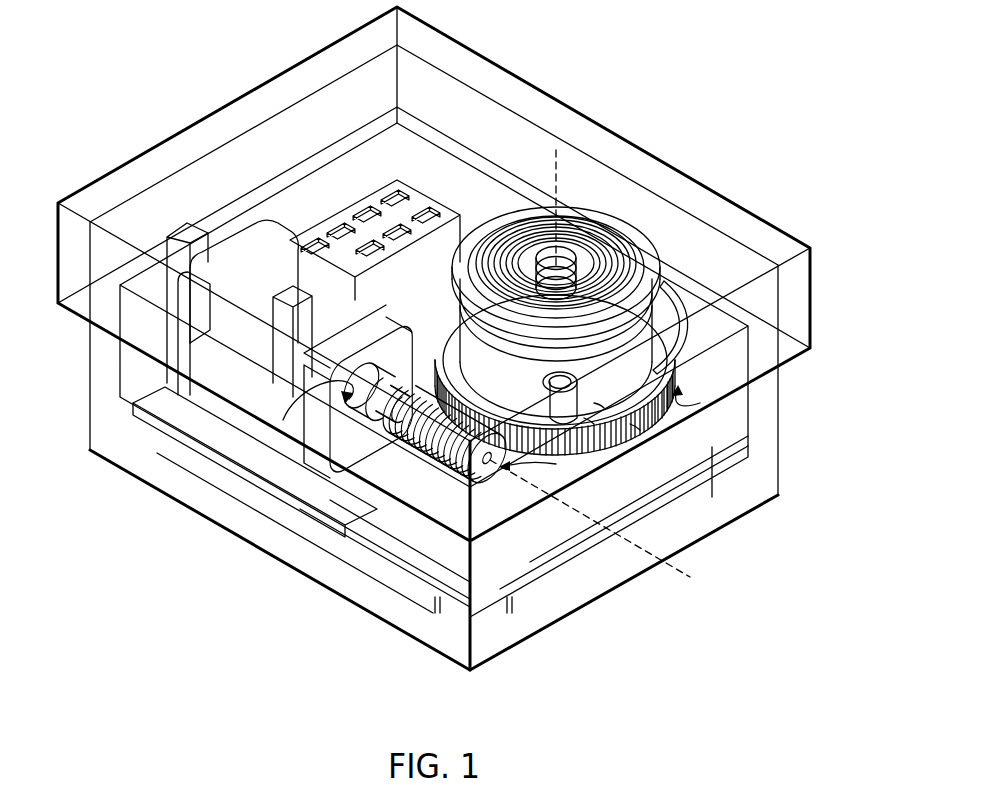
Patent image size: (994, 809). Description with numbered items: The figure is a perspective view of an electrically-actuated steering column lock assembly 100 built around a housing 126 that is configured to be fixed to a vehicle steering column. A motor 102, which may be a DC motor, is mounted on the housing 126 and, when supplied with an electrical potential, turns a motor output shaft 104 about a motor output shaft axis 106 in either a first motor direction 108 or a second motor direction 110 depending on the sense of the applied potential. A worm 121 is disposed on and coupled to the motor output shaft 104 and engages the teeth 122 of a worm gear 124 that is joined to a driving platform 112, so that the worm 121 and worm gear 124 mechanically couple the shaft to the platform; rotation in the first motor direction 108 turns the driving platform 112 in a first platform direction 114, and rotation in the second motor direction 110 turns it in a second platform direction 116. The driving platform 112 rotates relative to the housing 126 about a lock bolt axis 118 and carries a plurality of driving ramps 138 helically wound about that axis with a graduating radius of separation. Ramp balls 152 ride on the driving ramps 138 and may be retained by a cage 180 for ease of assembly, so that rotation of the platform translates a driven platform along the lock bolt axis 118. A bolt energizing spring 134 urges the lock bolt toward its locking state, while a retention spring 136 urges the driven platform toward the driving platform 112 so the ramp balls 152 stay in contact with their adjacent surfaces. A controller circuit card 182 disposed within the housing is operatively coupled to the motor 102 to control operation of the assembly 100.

The electrically-actuated steering column lock assembly 100 is at (625, 80).
The motor 102 is at (247, 297).
The motor output shaft 104 is at (393, 413).
The motor output shaft axis 106 is at (690, 578).
The first motor direction 108 is at (393, 360).
The second motor direction 110 is at (345, 382).
The driving platform 112 is at (658, 370).
The first platform direction 114 is at (563, 417).
The second platform direction 116 is at (620, 406).
The lock bolt axis 118 is at (556, 162).
The worm 121 is at (445, 470).
The teeth 122 is at (600, 405).
The worm gear 124 is at (637, 427).
The housing 126 is at (177, 413).
The bolt energizing spring 134 is at (570, 262).
The retention spring 136 is at (630, 300).
The driving ramps 138 is at (452, 330).
The ramp balls 152 is at (590, 420).
The cage 180 is at (672, 303).
The controller circuit card 182 is at (712, 447).